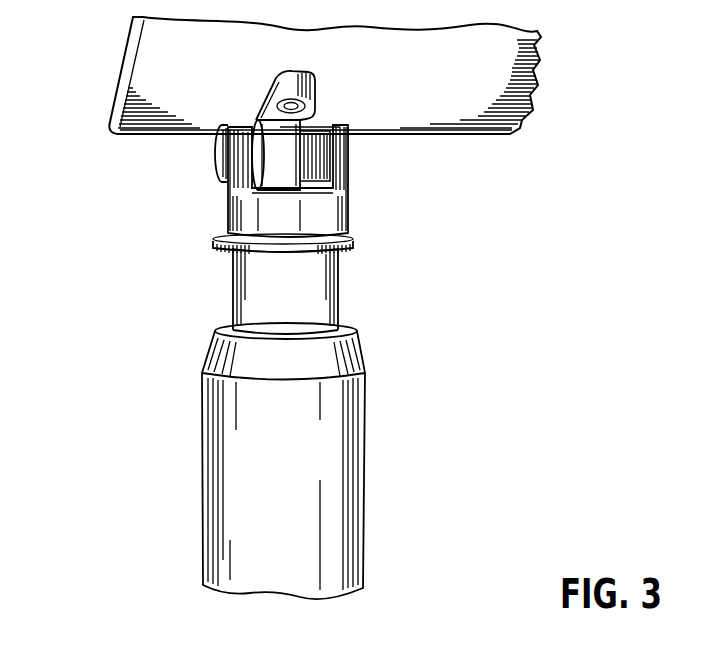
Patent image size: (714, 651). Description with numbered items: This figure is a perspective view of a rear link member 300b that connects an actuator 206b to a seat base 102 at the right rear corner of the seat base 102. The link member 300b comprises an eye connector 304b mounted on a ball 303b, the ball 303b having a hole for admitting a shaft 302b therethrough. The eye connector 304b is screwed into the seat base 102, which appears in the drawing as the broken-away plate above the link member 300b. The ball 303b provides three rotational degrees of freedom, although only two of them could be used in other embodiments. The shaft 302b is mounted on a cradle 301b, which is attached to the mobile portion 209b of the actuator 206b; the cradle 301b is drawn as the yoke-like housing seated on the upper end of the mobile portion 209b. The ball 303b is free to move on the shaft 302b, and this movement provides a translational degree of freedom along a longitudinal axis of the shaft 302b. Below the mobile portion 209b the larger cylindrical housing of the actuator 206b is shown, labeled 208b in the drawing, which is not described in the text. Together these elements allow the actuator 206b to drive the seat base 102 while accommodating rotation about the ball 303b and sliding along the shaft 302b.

The seat base 102 is at (138, 54).
The link member 300b is at (455, 164).
The cradle 301b is at (340, 195).
The shaft 302b is at (217, 152).
The ball 303b is at (257, 142).
The eye connector 304b is at (313, 82).
The actuator 206b is at (457, 335).
The container body 208b is at (346, 448).
The mobile portion 209b is at (338, 270).